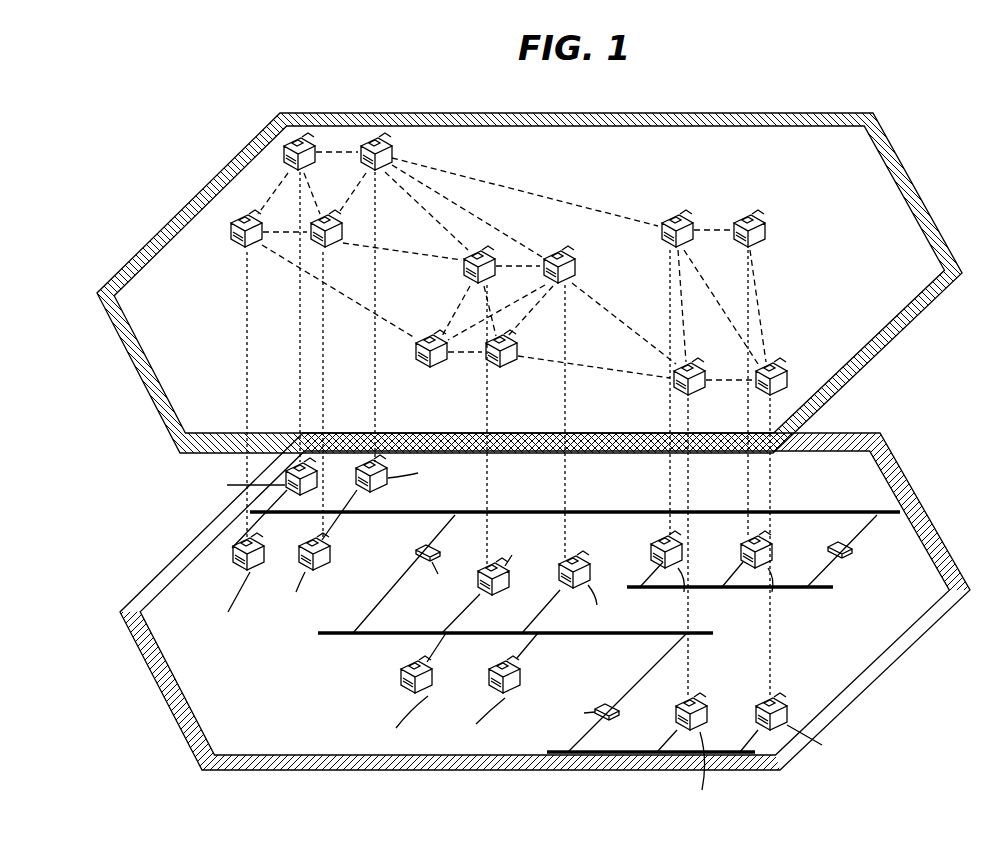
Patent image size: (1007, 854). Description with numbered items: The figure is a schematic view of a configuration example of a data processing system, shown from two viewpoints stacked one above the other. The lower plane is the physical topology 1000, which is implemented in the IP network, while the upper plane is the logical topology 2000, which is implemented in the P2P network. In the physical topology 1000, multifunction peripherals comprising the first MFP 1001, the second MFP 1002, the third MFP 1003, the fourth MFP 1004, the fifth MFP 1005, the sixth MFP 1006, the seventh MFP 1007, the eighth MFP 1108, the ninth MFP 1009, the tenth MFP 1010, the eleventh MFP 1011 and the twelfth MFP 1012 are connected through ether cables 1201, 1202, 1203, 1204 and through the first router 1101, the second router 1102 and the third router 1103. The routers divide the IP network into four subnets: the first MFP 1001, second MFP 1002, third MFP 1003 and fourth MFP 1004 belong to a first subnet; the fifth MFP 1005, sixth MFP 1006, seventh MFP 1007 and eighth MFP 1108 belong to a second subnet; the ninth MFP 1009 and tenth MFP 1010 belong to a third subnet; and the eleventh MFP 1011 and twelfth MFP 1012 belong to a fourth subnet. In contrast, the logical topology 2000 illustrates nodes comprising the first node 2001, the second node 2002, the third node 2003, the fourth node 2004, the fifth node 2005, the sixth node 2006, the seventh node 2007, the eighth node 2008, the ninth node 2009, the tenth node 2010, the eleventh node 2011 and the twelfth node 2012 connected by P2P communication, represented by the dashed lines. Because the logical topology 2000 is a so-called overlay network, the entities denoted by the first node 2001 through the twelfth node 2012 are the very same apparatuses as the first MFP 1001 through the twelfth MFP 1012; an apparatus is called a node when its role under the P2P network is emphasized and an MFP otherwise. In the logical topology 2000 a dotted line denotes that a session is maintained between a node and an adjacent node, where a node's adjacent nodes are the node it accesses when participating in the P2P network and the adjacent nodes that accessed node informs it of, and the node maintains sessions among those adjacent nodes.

The physical topology 1000 is at (905, 488).
The logical topology 2000 is at (916, 188).
The node 1 2001 is at (285, 142).
The node 2 2002 is at (233, 222).
The node 3 2003 is at (395, 150).
The node 4 2004 is at (315, 248).
The node 5 2005 is at (478, 252).
The node 6 2006 is at (560, 245).
The node 7 2007 is at (437, 372).
The node 8 2008 is at (503, 372).
The node 9 2009 is at (672, 385).
The node 10 2010 is at (783, 365).
The node 11 2011 is at (666, 215).
The node 12 2012 is at (746, 215).
The MFP 1 1001 is at (292, 462).
The MFP 2 1002 is at (235, 543).
The MFP 3 1003 is at (365, 462).
The MFP 4 1004 is at (332, 556).
The MFP 5 1005 is at (474, 590).
The MFP 6 1006 is at (558, 590).
The MFP 7 1007 is at (398, 680).
The MFP8 1108 is at (520, 666).
The MFP 9 1009 is at (740, 680).
The MFP 10 1010 is at (822, 680).
The MFP 11 1011 is at (648, 542).
The MFP 12 1012 is at (748, 540).
The router 1 1101 is at (418, 548).
The router 2 1102 is at (828, 550).
The router 3 1103 is at (600, 704).
The ether cable 1201 is at (530, 512).
The ether cable 1202 is at (365, 635).
The ether cable 1203 is at (612, 756).
The ether cable 1204 is at (835, 588).